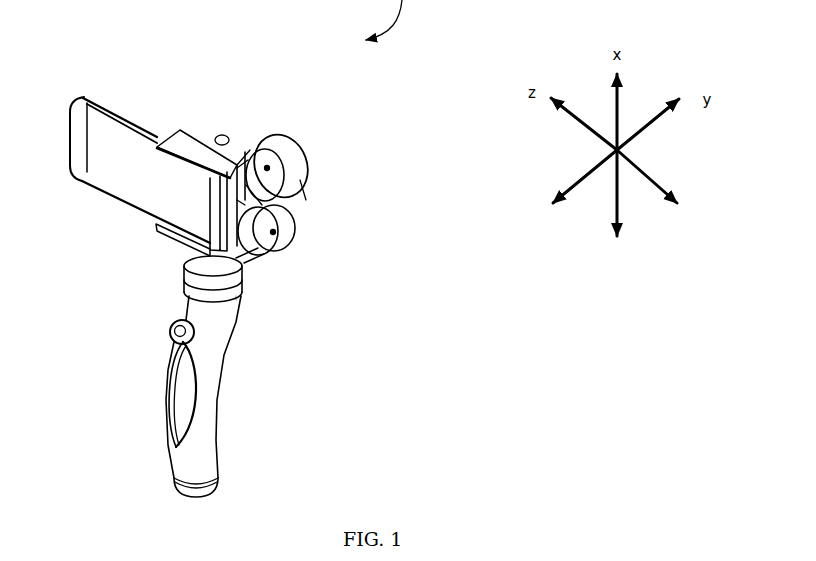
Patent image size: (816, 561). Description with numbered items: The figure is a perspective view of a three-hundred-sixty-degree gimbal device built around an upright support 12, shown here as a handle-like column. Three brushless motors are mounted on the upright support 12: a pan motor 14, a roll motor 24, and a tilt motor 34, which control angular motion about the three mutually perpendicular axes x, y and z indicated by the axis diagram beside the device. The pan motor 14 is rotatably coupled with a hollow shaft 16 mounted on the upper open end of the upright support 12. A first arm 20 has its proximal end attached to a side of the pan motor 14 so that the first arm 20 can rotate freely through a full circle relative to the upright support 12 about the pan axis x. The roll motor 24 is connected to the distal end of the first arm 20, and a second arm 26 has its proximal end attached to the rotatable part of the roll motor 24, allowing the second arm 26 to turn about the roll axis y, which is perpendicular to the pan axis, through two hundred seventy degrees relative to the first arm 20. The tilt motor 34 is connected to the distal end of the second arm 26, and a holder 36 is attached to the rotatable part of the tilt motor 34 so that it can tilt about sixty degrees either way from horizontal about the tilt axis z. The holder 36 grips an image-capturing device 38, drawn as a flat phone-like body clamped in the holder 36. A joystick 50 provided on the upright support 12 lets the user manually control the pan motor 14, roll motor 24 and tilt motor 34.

The upright support 12 is at (167, 403).
The pan motor 14 is at (480, 388).
The hollow shaft 16 is at (187, 288).
The first arm 20 is at (256, 252).
The roll motor 24 is at (292, 135).
The second arm 26 is at (303, 178).
The tilt motor 34 is at (273, 233).
The holder 36 is at (169, 132).
The image-capturing device 38 is at (90, 97).
The joystick 50 is at (170, 336).